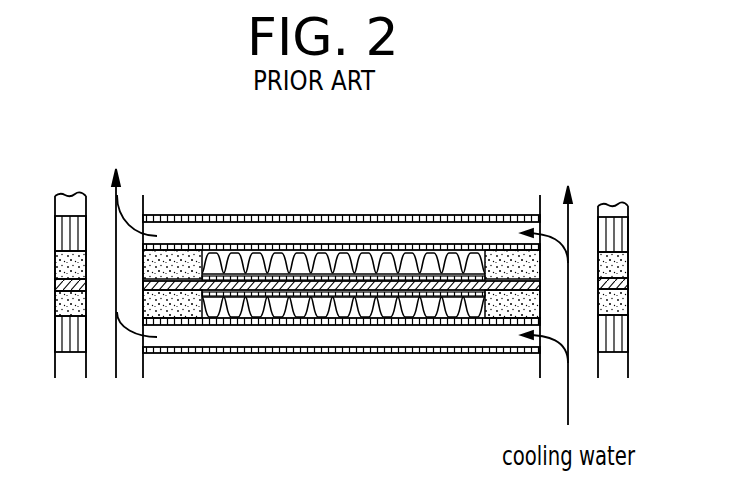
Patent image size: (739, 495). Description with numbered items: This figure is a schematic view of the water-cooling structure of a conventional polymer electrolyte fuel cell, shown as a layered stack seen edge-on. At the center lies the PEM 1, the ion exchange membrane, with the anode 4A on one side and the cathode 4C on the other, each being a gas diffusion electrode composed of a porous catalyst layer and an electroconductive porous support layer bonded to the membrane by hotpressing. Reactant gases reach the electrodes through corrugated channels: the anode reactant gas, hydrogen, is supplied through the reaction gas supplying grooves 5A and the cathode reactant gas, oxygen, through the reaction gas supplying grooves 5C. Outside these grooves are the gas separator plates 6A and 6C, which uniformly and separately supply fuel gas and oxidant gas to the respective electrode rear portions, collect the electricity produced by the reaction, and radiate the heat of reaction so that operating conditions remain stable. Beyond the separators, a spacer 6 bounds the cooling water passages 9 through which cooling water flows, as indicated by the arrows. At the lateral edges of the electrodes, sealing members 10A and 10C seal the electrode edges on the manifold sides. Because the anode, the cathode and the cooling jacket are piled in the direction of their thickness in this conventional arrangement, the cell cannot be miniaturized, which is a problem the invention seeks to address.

The PEM 1 is at (207, 288).
The anode 4A is at (256, 254).
The cathode 4C is at (255, 320).
The reaction gas supplying grooves 5A is at (347, 262).
The reaction gas supplying grooves 5C is at (453, 304).
The spacer 6 is at (618, 233).
The gas separator plate 6A is at (455, 251).
The gas separator plate 6C is at (396, 321).
The cooling water passage 9 is at (403, 236).
The sealing member 10A is at (618, 268).
The sealing member 10C is at (618, 308).